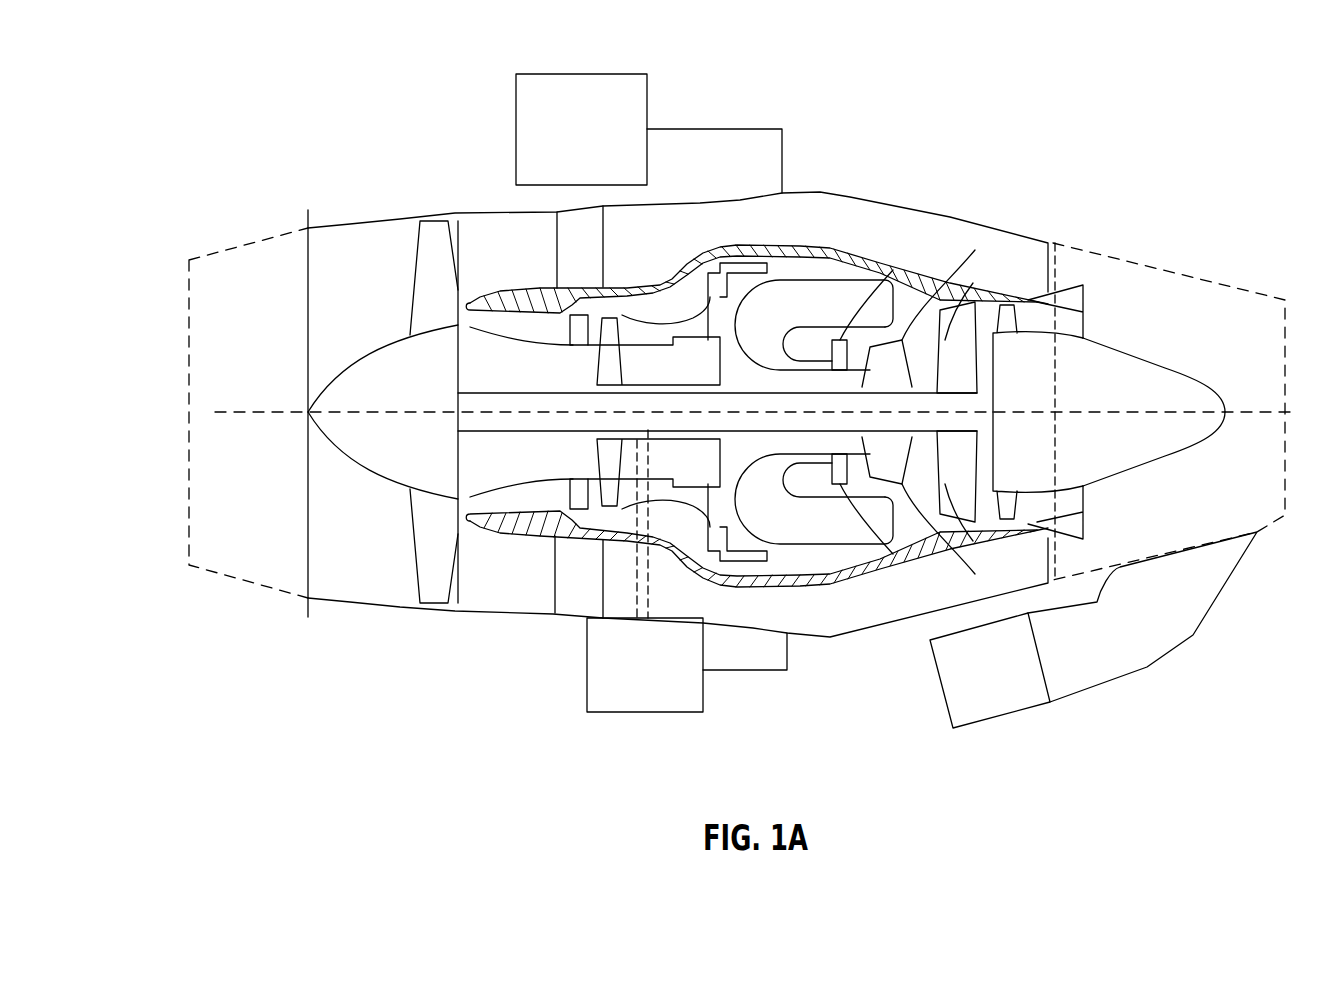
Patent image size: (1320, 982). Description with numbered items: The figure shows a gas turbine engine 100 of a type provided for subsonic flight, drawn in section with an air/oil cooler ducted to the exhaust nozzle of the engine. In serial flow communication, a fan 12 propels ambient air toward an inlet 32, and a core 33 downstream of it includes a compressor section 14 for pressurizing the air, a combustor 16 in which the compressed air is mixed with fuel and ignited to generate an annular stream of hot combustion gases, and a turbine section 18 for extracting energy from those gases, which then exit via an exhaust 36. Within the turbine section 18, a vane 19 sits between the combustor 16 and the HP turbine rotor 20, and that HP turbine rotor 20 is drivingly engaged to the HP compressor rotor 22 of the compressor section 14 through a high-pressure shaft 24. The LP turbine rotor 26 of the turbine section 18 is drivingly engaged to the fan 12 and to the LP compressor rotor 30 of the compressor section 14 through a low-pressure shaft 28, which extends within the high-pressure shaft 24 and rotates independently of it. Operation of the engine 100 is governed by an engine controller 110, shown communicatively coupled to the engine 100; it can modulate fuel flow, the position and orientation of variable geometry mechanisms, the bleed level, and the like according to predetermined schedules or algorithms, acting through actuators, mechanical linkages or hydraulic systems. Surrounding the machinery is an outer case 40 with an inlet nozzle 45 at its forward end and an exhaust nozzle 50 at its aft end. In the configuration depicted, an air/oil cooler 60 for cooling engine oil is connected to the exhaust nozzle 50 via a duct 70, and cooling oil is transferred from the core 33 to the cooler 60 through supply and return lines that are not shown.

The gas turbine engine 100 is at (1182, 117).
The engine controller 110 is at (649, 133).
The fan 12 is at (428, 533).
The compressor section 14 is at (628, 318).
The combustor 16 is at (792, 290).
The turbine section 18 is at (917, 510).
The vane 19 is at (893, 270).
The HP turbine rotor 20 is at (960, 325).
The HP compressor rotor 22 is at (687, 340).
The high-pressure shaft 24 is at (872, 310).
The LP turbine rotor 26 is at (973, 283).
The low-pressure shaft 28 is at (485, 528).
The LP compressor rotor 30 is at (613, 323).
The inlet 32 is at (327, 312).
The core 33 is at (843, 587).
The exhaust 36 is at (1080, 285).
The outer case 40 is at (547, 617).
The inlet nozzle 45 is at (187, 378).
The exhaust nozzle 50 is at (1263, 532).
The air/oil cooler 60 is at (1007, 713).
The duct 70 is at (1113, 677).